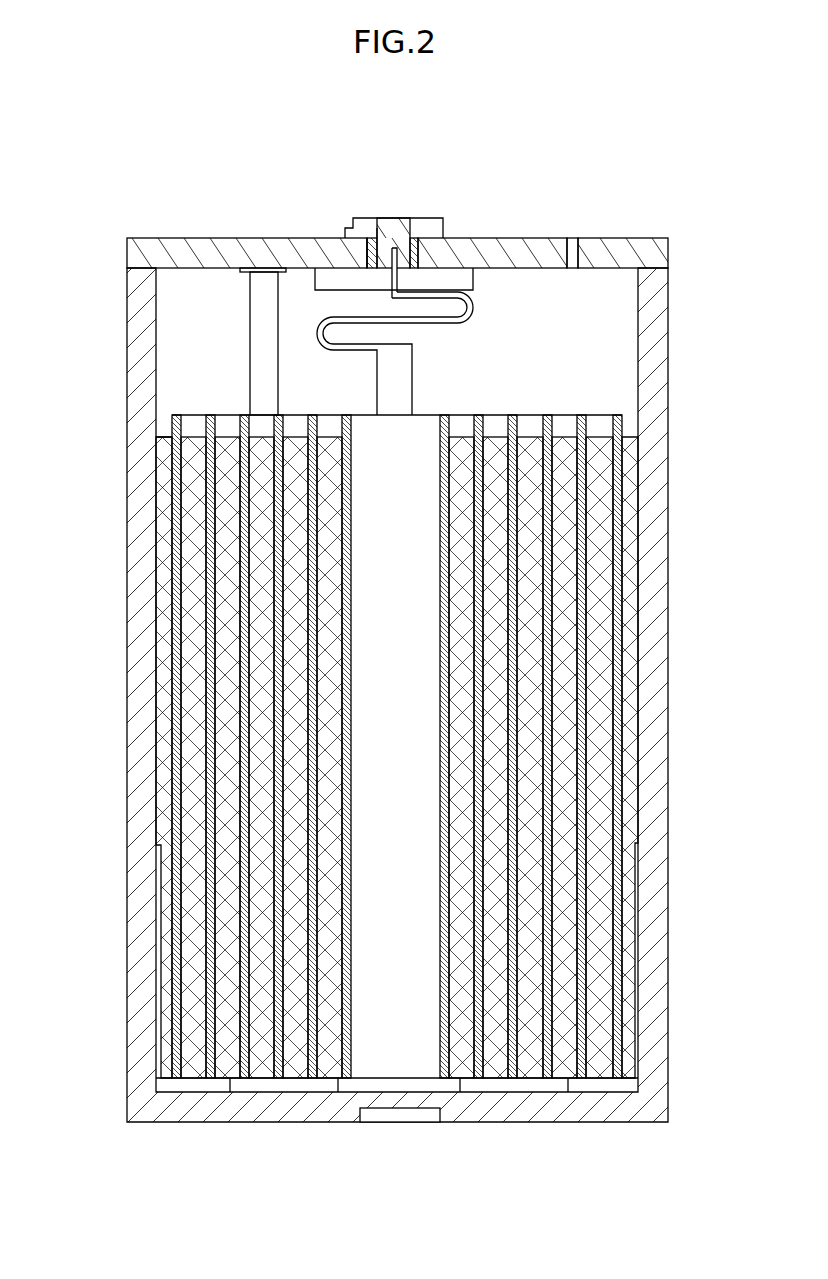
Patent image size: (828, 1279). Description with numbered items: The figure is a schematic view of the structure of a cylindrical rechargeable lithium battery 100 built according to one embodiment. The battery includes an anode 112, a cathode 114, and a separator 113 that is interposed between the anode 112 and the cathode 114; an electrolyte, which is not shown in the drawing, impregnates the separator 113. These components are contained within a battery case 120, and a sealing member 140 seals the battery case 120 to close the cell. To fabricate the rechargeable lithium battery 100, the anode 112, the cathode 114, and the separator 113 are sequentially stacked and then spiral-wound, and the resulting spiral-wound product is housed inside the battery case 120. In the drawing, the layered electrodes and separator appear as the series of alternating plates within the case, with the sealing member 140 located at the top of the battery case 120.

The rechargeable lithium battery 100 is at (463, 138).
The battery case 120 is at (140, 334).
The sealing member 140 is at (345, 228).
The anode 112 is at (227, 806).
The separator 113 is at (205, 1000).
The cathode 114 is at (600, 908).